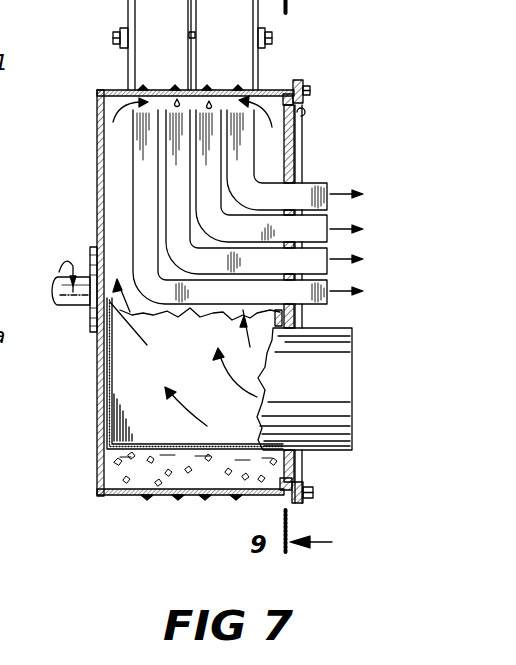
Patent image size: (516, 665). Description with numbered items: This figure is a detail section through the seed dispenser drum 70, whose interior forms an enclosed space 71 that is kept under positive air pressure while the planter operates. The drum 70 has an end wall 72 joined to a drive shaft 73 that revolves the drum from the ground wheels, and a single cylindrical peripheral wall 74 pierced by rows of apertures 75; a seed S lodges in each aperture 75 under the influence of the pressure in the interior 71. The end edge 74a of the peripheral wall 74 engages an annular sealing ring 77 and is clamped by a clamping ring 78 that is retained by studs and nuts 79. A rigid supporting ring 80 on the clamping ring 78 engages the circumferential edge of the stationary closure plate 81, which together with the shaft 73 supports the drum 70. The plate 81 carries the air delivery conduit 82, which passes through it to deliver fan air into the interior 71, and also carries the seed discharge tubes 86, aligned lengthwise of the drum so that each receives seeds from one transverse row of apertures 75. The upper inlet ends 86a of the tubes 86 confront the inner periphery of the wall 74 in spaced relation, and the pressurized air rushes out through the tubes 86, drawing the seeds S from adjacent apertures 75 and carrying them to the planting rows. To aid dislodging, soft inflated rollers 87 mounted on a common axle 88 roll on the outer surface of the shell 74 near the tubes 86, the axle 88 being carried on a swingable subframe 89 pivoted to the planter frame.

The dispenser drum 70 is at (72, 111).
The enclosed space 71 is at (104, 174).
The end wall 72 is at (100, 219).
The drive shaft 73 is at (66, 306).
The peripheral wall 74 is at (117, 499).
The end edge of the peripheral wall 74a is at (270, 89).
The apertures 75 is at (205, 498).
The annular sealing ring 77 is at (304, 483).
The clamping ring 78 is at (309, 96).
The studs and nuts 79 is at (306, 82).
The supporting ring 80 is at (301, 116).
The closure plate 81 is at (285, 317).
The air delivery conduit 82 is at (269, 411).
The seed discharge tubes 86 is at (316, 186).
The upper inlet ends of the discharge tubes 86a is at (172, 147).
The inflated rollers 87 is at (124, 2).
The axle 88 is at (116, 40).
The swingable subframe 89 is at (125, 15).
The seed S is at (113, 464).